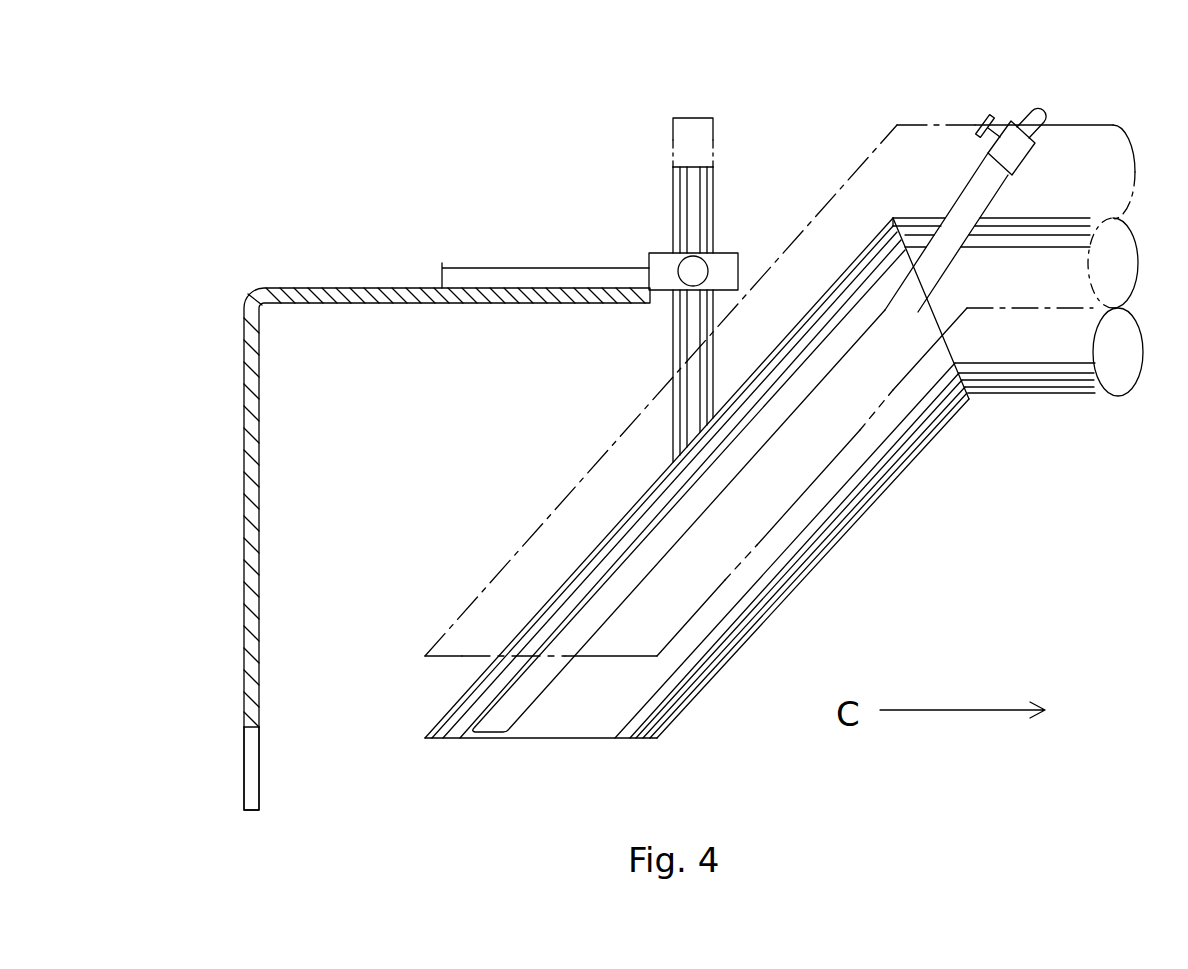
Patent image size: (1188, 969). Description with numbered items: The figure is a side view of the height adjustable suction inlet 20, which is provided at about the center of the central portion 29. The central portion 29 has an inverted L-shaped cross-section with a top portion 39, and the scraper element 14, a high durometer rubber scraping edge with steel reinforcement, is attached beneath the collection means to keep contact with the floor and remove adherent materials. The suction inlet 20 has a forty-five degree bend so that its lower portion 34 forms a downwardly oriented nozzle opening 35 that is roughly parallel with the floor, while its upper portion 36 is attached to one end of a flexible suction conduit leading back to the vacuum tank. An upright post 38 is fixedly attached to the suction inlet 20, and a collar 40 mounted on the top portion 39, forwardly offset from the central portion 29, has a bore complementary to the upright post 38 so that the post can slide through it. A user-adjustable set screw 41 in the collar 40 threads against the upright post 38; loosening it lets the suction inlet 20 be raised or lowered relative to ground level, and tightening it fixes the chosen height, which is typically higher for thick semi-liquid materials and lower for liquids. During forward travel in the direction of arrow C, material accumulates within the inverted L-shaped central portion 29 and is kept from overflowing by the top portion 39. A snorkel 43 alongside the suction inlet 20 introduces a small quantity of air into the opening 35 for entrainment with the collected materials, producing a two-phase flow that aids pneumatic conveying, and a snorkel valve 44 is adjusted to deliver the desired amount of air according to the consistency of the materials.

The scraper element 14 is at (250, 792).
The height adjustable suction inlet 20 is at (831, 110).
The central portion 29 is at (170, 344).
The lower portion 34 is at (858, 486).
The nozzle opening 35 is at (620, 757).
The upper portion 36 is at (1016, 370).
The upright post 38 is at (685, 148).
The top portion 39 is at (393, 288).
The collar 40 is at (663, 262).
The set screw 41 is at (699, 272).
The snorkel 43 is at (545, 678).
The snorkel valve 44 is at (1005, 155).